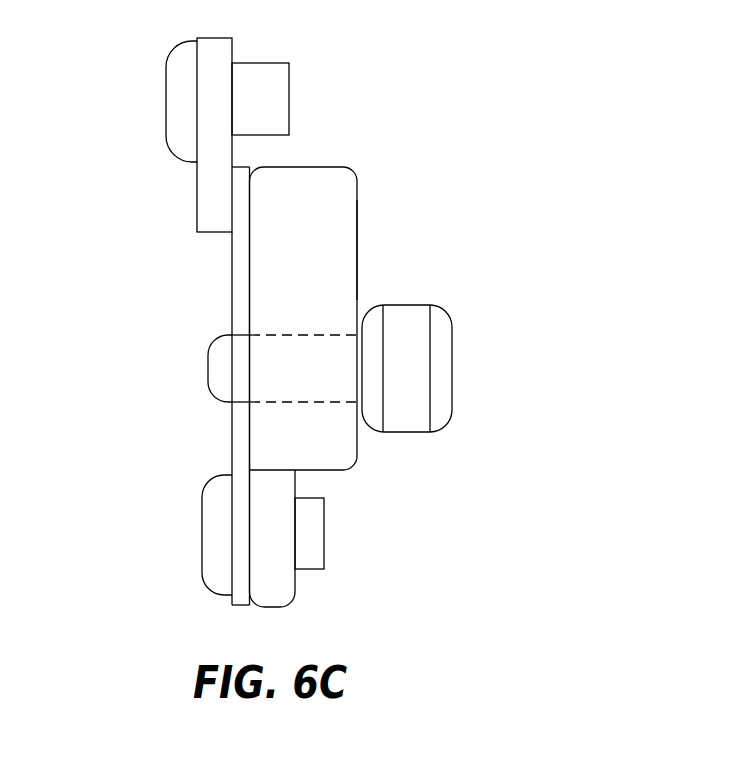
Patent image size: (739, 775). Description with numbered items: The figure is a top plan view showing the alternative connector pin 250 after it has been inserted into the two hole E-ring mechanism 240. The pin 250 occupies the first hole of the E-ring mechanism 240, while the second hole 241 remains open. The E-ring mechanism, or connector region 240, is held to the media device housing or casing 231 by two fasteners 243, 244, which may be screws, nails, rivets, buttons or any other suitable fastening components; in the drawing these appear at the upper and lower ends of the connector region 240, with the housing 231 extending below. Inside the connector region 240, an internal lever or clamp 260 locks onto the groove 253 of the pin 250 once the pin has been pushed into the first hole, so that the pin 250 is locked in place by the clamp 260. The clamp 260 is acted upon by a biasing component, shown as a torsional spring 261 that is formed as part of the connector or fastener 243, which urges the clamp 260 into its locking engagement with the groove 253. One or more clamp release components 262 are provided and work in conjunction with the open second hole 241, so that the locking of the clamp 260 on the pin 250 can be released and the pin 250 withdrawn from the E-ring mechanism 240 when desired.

The media device housing 231 is at (277, 595).
The two hole E-ring mechanism 240 is at (312, 180).
The second hole 241 is at (366, 253).
The fastener 243 is at (223, 540).
The fastener 244 is at (188, 84).
The pin 250 is at (402, 415).
The groove 253 is at (226, 415).
The clamp 260 is at (243, 313).
The torsional spring 261 is at (303, 555).
The clamp release component 262 is at (262, 258).